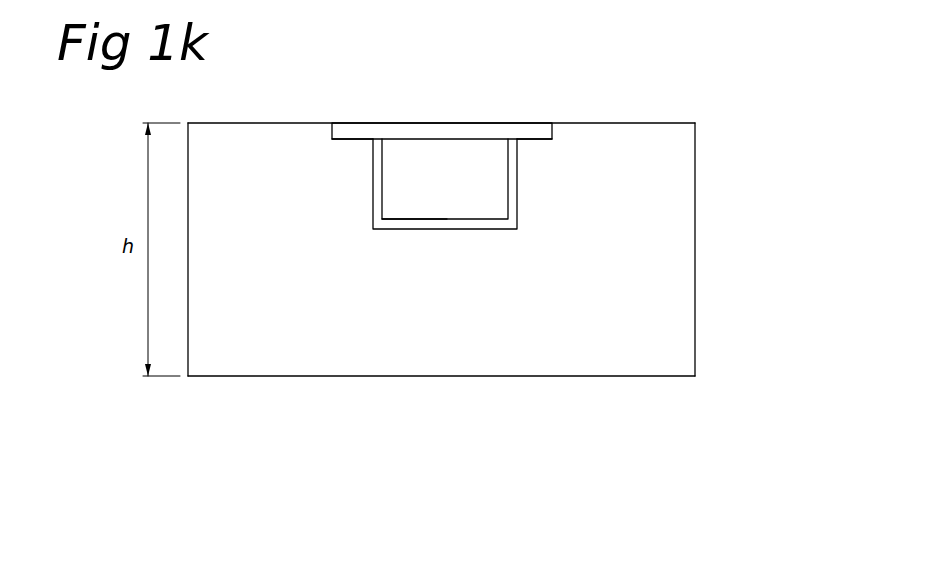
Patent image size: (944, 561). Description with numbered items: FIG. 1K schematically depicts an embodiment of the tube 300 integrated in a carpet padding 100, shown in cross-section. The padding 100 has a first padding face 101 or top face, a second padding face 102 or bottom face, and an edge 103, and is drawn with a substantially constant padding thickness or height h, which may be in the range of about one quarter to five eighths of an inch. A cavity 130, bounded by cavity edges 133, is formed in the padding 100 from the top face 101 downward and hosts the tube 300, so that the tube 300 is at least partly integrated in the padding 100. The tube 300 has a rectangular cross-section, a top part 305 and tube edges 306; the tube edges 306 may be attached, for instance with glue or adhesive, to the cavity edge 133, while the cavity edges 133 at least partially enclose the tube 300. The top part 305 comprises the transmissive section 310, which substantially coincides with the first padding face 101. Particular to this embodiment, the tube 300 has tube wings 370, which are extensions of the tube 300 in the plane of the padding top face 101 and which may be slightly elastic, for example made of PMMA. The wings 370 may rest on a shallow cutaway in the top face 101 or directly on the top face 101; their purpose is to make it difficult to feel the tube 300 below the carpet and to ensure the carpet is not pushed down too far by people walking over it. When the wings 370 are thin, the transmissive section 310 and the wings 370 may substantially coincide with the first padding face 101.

The padding 100 is at (478, 224).
The first padding face 101 is at (608, 123).
The second padding face 102 is at (635, 376).
The edge 103 is at (695, 228).
The cavity 130 is at (485, 219).
The cavity edge 133 is at (517, 189).
The tube 300 is at (541, 231).
The top part 305 is at (409, 123).
The tube edge 306 is at (407, 219).
The transmissive section 310 is at (490, 123).
The tube wings 370 is at (353, 123).